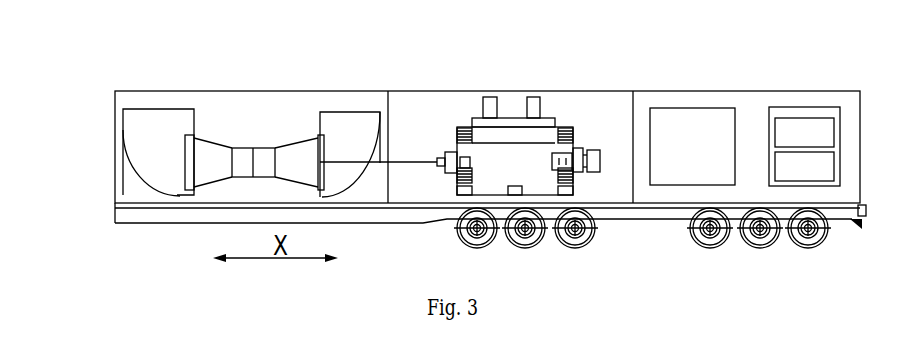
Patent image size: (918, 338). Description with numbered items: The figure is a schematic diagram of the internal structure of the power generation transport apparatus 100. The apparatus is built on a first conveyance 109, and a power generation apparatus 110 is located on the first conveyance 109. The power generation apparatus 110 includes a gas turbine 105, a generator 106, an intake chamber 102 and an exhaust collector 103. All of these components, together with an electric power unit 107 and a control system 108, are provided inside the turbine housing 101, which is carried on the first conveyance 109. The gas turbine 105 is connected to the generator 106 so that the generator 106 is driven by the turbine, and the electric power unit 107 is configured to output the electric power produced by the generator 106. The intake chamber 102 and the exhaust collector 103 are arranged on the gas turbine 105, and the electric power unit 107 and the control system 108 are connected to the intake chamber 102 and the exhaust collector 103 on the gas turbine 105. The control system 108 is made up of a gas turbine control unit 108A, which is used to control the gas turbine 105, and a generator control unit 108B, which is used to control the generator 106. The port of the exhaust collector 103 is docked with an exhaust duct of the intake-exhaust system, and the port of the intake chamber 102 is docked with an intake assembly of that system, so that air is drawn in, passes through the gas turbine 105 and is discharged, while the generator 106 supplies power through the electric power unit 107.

The power generation transport apparatus 100 is at (449, 125).
The power generation apparatus 110 is at (265, 62).
The turbine housing 101 is at (505, 72).
The intake chamber 102 is at (114, 130).
The exhaust collector 103 is at (349, 102).
The gas turbine 105 is at (270, 149).
The generator 106 is at (448, 138).
The electric power unit 107 is at (692, 102).
The control system 108 is at (804, 108).
The gas turbine control unit 108A is at (804, 133).
The generator control unit 108B is at (804, 167).
The first conveyance 109 is at (102, 214).